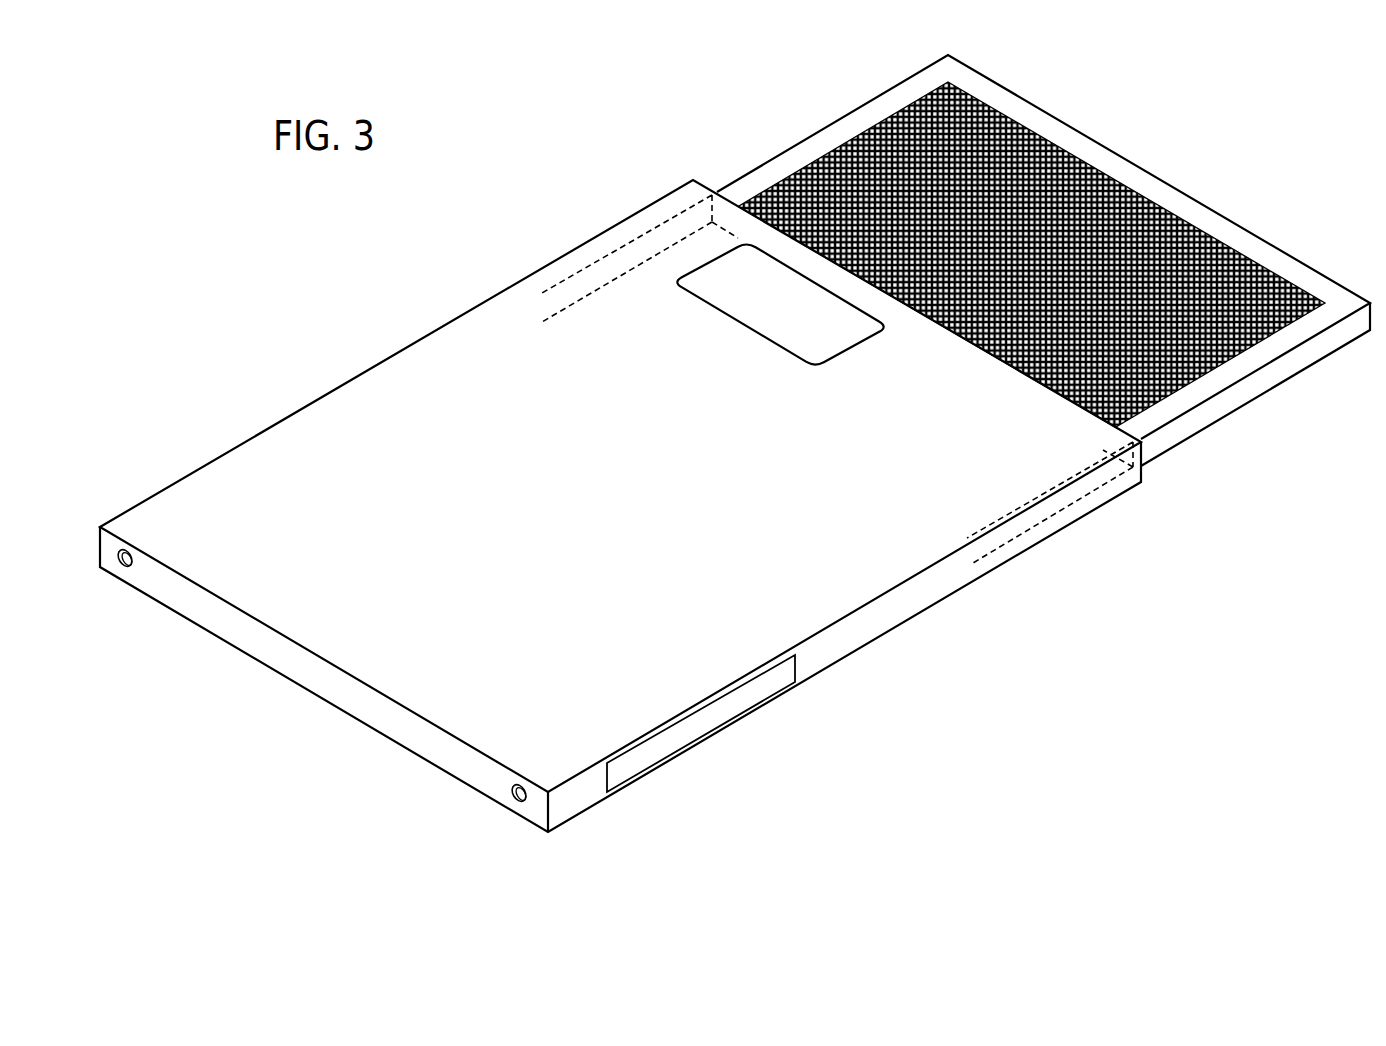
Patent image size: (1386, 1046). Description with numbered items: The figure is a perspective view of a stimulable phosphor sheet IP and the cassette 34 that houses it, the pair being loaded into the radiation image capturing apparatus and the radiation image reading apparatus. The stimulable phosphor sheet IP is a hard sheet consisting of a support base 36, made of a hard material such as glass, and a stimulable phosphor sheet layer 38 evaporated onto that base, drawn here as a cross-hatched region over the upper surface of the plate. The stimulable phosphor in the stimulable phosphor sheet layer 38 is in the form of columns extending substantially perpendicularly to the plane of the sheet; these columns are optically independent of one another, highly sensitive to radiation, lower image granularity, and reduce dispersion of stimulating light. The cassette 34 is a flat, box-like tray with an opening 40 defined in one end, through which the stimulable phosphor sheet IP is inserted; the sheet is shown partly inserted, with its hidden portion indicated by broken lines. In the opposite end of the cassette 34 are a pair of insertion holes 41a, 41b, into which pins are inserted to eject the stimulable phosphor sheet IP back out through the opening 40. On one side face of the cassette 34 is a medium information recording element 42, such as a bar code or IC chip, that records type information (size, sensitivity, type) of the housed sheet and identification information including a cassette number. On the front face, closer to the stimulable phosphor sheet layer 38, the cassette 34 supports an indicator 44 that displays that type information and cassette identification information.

The cassette 34 is at (388, 368).
The support base 36 is at (1338, 297).
The stimulable phosphor sheet layer 38 is at (1035, 135).
The stimulable phosphor sheet IP is at (1043, 260).
The opening 40 is at (1150, 446).
The medium information recording element 42 is at (708, 718).
The indicator 44 is at (807, 337).
The insertion hole 41a is at (520, 803).
The insertion hole 41b is at (123, 567).